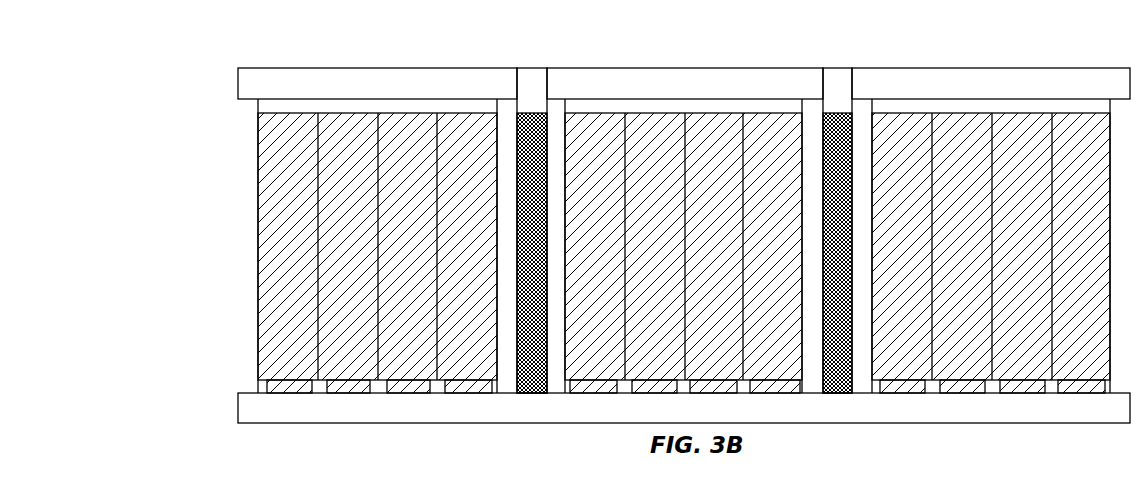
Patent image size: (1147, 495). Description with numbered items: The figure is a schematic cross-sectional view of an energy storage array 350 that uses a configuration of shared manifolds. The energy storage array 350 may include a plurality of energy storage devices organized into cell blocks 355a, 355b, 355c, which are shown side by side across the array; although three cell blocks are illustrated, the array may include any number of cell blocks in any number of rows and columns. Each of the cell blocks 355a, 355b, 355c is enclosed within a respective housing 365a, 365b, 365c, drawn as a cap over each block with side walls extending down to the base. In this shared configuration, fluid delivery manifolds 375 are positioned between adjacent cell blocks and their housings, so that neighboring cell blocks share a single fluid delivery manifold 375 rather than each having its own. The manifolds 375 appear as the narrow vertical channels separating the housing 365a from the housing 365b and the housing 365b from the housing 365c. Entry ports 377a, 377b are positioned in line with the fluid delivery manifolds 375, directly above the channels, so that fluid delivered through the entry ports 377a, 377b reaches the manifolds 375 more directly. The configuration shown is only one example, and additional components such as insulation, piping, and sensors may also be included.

The energy storage array 350 is at (202, 97).
The cell block 355a is at (338, 113).
The cell block 355b is at (587, 113).
The cell block 355c is at (1023, 113).
The housing 365a is at (258, 68).
The housing 365b is at (742, 68).
The housing 365c is at (967, 68).
The fluid delivery manifold 375 is at (852, 393).
The entry port 377a is at (523, 68).
The entry port 377b is at (832, 68).